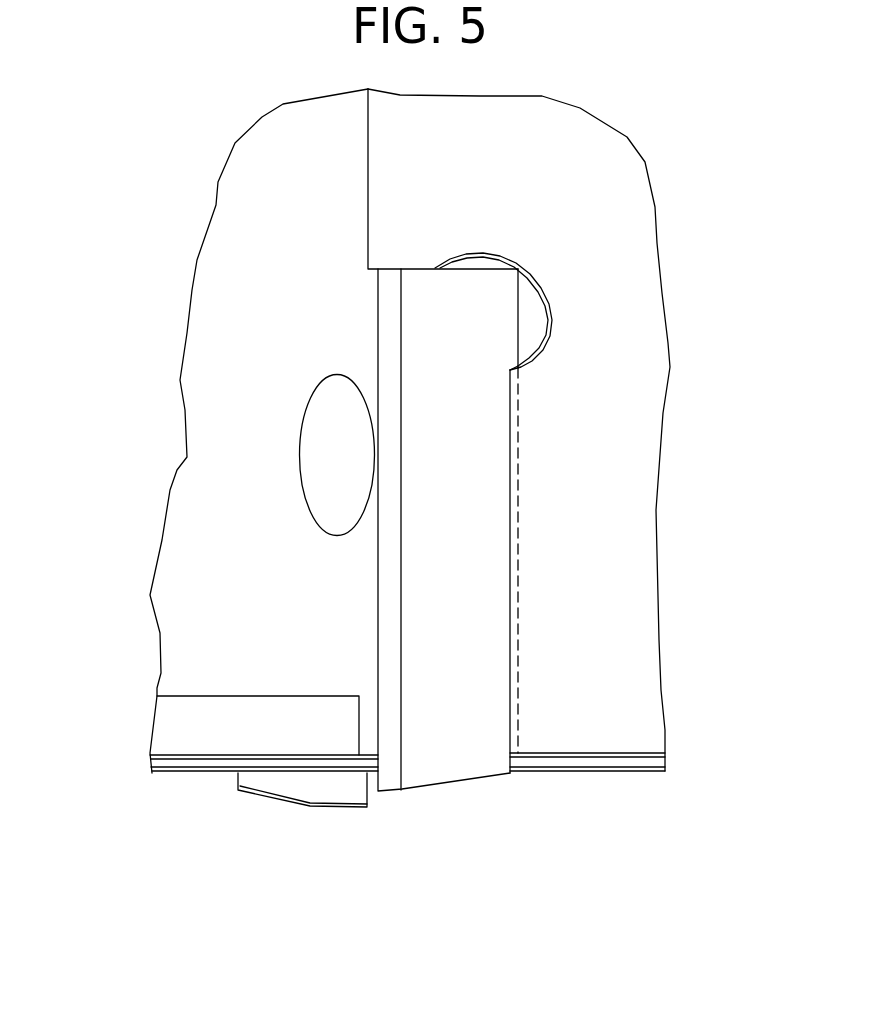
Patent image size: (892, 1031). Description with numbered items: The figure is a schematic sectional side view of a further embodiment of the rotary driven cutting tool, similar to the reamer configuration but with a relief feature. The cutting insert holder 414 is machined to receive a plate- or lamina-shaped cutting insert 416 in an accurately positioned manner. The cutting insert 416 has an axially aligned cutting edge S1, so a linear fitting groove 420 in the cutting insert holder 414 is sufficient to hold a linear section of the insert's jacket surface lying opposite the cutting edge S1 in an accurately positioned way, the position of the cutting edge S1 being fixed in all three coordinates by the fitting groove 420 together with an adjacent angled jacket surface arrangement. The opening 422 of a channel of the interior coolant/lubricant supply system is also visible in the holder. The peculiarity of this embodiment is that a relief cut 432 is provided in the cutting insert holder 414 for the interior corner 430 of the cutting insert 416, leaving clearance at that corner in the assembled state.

The cutting insert holder 414 is at (627, 218).
The cutting insert 416 is at (462, 758).
The fitting groove 420 is at (518, 673).
The opening of a channel 422 is at (300, 457).
The interior corner 430 is at (493, 300).
The relief cut 432 is at (547, 318).
The cutting edge S1 is at (379, 562).